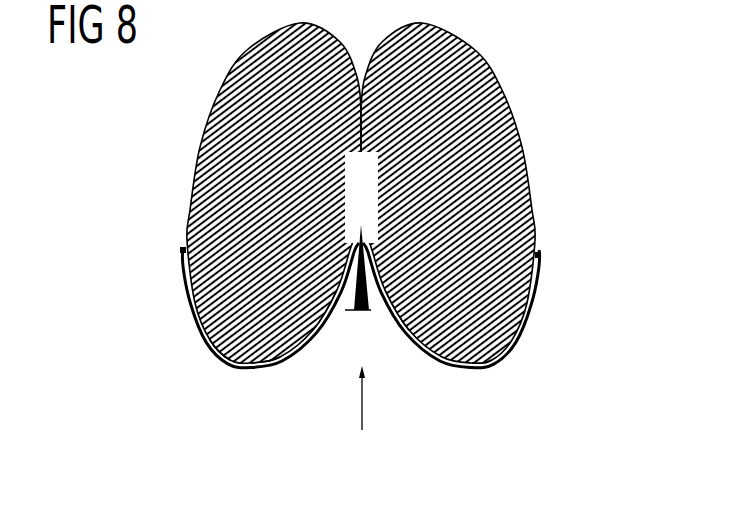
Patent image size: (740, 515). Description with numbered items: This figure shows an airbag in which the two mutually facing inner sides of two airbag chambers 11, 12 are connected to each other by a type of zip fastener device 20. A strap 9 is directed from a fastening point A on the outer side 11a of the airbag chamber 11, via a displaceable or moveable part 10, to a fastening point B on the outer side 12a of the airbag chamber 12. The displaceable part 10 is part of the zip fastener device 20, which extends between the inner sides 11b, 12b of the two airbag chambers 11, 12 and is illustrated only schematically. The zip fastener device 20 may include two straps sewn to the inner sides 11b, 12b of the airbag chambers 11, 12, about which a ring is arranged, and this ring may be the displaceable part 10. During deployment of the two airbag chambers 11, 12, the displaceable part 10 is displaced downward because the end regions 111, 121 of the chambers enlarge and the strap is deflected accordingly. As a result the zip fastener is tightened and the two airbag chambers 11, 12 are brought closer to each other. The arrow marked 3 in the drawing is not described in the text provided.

The airbag chamber 11 is at (205, 150).
The airbag chamber 12 is at (520, 160).
The outer side of airbag chamber 11a is at (190, 292).
The outer side of airbag chamber 12a is at (533, 305).
The inner side of airbag chamber 11b is at (323, 312).
The inner side of airbag chamber 12b is at (409, 333).
The fastening point A is at (181, 250).
The fastening point B is at (540, 256).
The strap 9 is at (222, 358).
The end region 111 is at (260, 350).
The end region 121 is at (485, 360).
The displaceable part 10 is at (370, 293).
The zip fastener device 20 is at (375, 208).
The material feed direction 3 is at (362, 417).